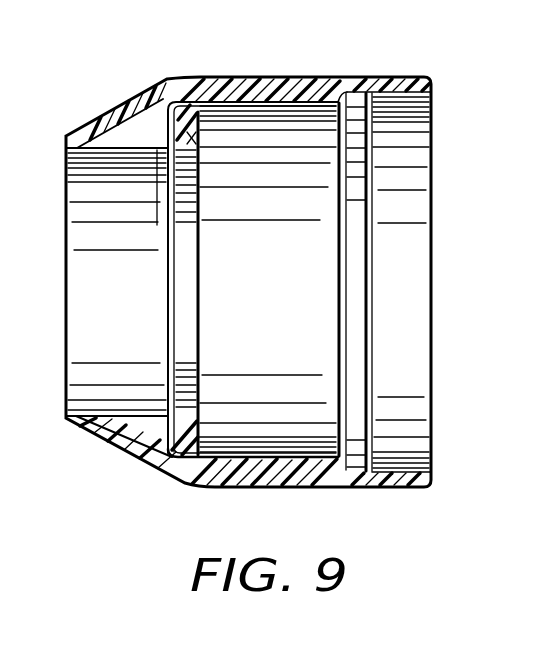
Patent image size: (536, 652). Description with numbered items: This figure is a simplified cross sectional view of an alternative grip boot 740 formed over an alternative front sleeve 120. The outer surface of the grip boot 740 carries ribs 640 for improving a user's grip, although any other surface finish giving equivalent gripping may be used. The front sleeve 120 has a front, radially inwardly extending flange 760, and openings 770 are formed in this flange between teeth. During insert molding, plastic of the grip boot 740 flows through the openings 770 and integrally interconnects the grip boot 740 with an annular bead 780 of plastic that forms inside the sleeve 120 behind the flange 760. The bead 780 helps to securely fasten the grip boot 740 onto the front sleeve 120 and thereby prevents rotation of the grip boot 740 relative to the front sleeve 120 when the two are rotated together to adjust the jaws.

The ribs 640 is at (262, 76).
The grip boot 740 is at (117, 121).
The front, radially inwardly extending flange 760 is at (157, 222).
The openings 770 is at (175, 161).
The annular bead 780 is at (192, 142).
The front sleeve 120 is at (275, 456).